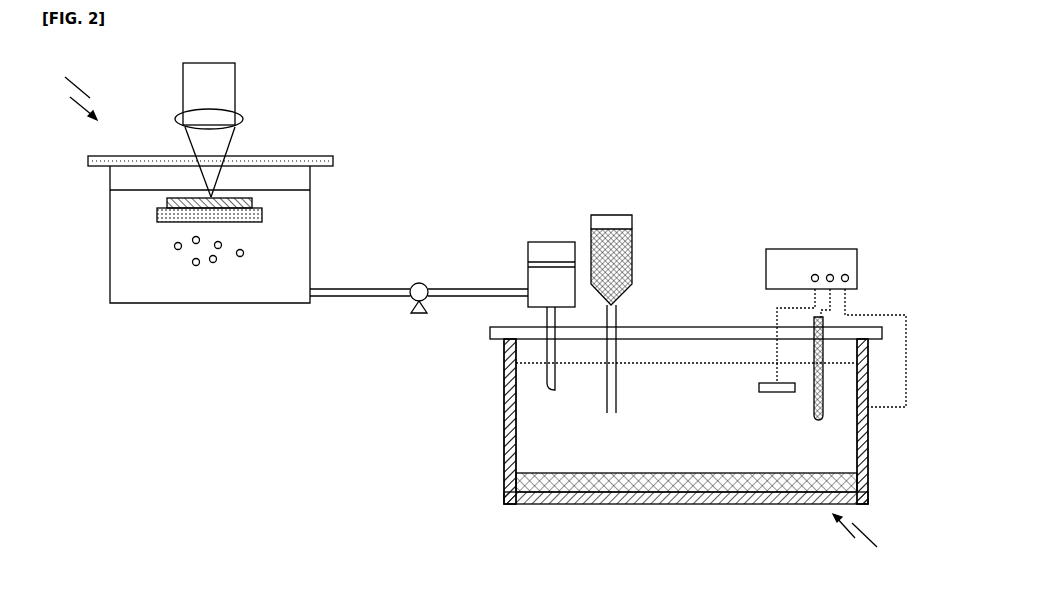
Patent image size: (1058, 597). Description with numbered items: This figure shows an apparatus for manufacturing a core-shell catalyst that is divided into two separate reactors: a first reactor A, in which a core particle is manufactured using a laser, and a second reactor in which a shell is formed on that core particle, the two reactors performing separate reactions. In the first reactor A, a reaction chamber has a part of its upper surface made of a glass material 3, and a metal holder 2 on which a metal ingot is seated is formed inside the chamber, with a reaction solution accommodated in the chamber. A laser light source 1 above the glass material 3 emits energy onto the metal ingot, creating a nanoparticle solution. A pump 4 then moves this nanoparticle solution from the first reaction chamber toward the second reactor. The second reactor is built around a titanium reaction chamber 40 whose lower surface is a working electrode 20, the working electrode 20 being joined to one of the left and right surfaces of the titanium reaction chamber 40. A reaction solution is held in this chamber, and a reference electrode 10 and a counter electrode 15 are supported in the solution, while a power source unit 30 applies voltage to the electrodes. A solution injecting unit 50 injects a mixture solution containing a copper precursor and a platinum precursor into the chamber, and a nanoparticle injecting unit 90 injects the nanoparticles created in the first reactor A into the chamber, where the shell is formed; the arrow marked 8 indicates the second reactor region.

The first reactor A is at (72, 93).
The laser light source 1 is at (235, 104).
The metal holder 2 is at (262, 218).
The glass material 3 is at (333, 162).
The pump 4 is at (418, 314).
The electrolysis direction 8 is at (860, 539).
The reference electrode 10 is at (814, 420).
The counter electrode 15 is at (777, 318).
The working electrode 20 is at (907, 360).
The power source unit 30 is at (843, 254).
The titanium reaction chamber 40 is at (504, 464).
The solution injecting unit 50 is at (632, 237).
The nanoparticle injecting unit 90 is at (545, 240).